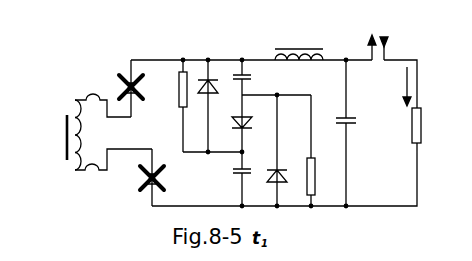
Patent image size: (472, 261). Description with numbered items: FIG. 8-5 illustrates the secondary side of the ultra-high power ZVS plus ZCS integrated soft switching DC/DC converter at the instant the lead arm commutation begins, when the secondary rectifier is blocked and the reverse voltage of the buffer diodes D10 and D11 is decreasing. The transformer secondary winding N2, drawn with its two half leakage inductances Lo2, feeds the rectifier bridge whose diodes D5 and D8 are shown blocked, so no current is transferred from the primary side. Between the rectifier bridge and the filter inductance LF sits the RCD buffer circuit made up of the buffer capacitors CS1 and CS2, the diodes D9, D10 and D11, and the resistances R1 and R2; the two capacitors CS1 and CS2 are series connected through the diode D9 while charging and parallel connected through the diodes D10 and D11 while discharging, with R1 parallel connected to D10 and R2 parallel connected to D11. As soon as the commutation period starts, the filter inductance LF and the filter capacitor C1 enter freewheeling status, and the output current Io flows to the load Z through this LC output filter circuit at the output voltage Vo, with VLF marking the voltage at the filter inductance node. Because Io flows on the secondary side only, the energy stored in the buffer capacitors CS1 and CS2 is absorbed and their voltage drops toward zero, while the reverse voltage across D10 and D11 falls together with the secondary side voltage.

The transformer secondary winding N2 is at (85, 135).
The secondary leakage inductance (half) Lo2 is at (113, 142).
The rectifier bridge diode D5 is at (125, 88).
The rectifier bridge diode D8 is at (156, 177).
The resistance R1 is at (175, 106).
The buffer diode D10 is at (217, 106).
The buffer capacitor CS1 is at (255, 77).
The diode D9 is at (237, 123).
The buffer capacitor CS2 is at (233, 179).
The buffer diode D11 is at (286, 150).
The resistance R2 is at (321, 150).
The filter inductance LF is at (308, 49).
The filter capacitor C1 is at (337, 133).
The load Z is at (422, 125).
The output current Io is at (401, 86).
The output voltage Vo is at (427, 51).
The filter inductor voltage VLF is at (244, 46).